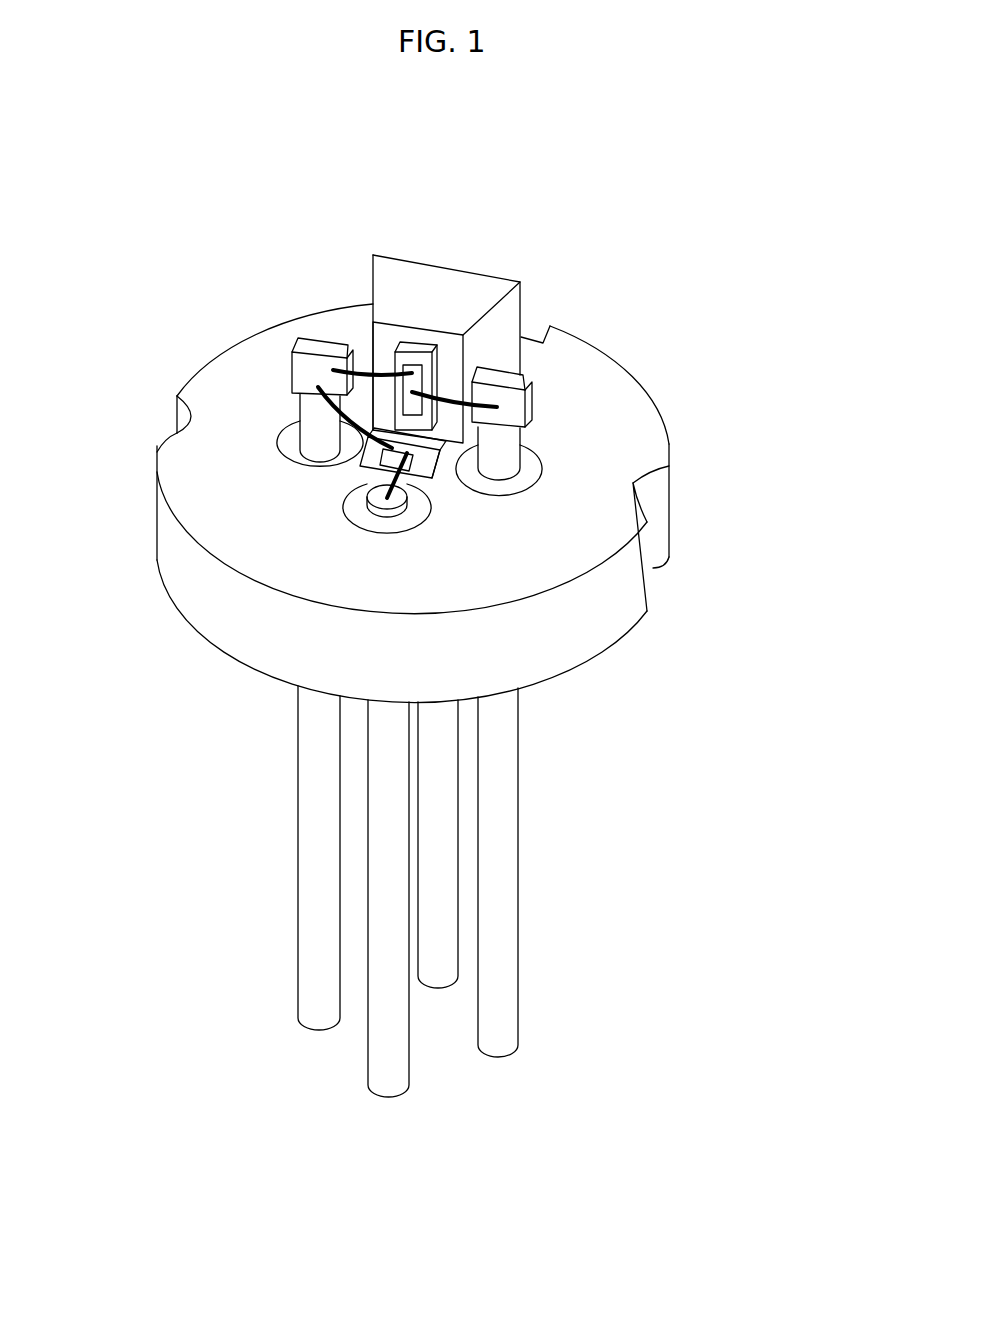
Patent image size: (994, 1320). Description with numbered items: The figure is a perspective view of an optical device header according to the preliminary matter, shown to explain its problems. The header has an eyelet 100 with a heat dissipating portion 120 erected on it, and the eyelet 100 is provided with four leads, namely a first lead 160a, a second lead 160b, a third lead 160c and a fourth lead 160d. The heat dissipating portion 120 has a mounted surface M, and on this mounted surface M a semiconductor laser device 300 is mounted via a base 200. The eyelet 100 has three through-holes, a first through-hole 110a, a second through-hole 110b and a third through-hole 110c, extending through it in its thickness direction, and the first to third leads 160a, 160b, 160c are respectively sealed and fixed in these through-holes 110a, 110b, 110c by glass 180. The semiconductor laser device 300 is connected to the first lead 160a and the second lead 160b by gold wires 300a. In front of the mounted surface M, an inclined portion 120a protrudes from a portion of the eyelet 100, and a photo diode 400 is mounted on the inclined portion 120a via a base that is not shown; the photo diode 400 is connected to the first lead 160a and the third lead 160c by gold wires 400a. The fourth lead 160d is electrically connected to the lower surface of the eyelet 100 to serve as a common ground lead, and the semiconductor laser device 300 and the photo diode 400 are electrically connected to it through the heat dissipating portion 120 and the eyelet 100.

The eyelet 100 is at (580, 360).
The heat dissipating portion 120 is at (503, 312).
The inclined portion 120a is at (440, 463).
The mounted surface M is at (362, 367).
The base 200 is at (418, 352).
The semiconductor laser device 300 is at (437, 358).
The gold wires 300a is at (385, 348).
The photo diode 400 is at (430, 463).
The gold wires 400a is at (305, 422).
The first through-hole 110a is at (317, 460).
The second through-hole 110b is at (540, 457).
The third through-hole 110c is at (385, 512).
The glass 180 is at (307, 458).
The first lead 160a is at (320, 1018).
The second lead 160b is at (500, 1043).
The third lead 160c is at (387, 1078).
The fourth lead 160d is at (435, 980).